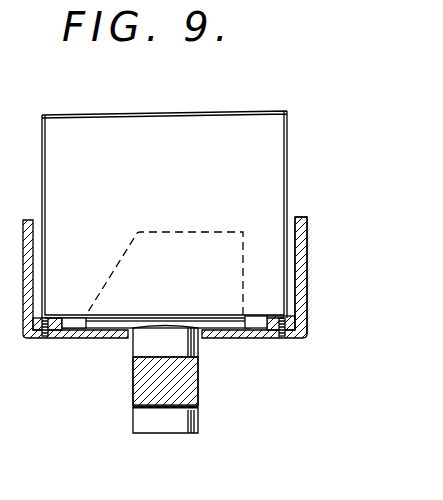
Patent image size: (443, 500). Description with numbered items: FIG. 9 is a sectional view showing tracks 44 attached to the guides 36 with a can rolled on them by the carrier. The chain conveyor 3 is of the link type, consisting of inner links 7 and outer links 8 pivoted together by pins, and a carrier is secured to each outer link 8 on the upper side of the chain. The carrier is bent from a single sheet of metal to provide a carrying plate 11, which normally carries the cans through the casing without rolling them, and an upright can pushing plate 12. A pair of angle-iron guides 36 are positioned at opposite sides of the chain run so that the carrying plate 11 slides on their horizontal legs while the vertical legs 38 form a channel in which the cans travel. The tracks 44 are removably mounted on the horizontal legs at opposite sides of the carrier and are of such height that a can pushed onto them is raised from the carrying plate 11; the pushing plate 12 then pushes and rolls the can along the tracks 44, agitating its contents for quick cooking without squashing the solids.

The chain conveyor 3 is at (270, 338).
The inner links 7 is at (178, 386).
The outer links 8 is at (158, 344).
The carrying plate 11 is at (166, 326).
The can pushing plate 12 is at (233, 230).
The guides 36 is at (321, 221).
The vertical legs 38 is at (307, 263).
The tracks 44 is at (360, 298).